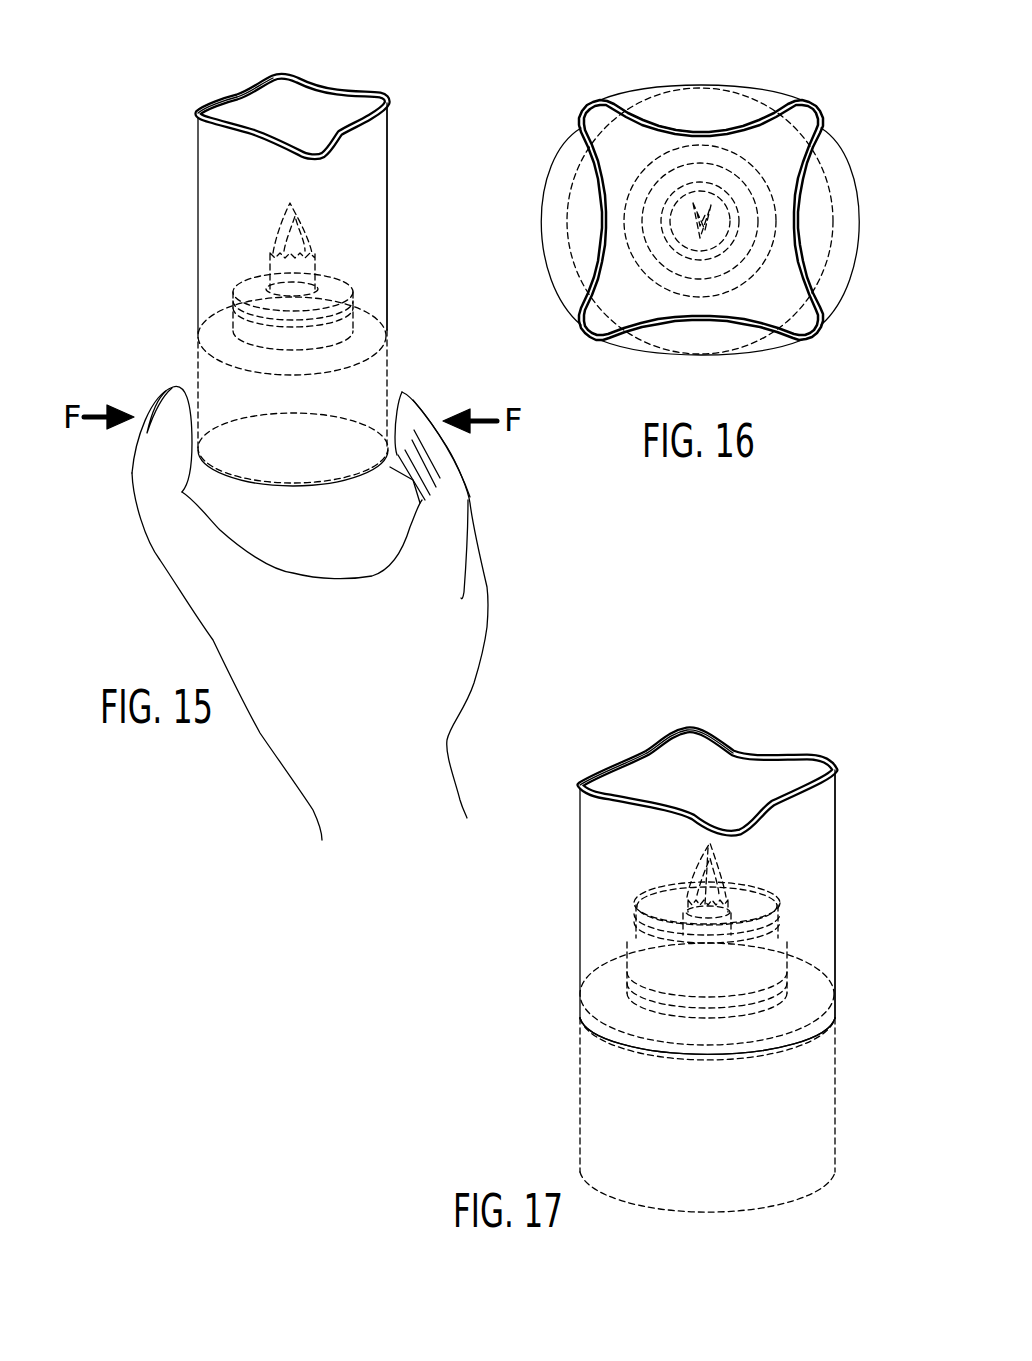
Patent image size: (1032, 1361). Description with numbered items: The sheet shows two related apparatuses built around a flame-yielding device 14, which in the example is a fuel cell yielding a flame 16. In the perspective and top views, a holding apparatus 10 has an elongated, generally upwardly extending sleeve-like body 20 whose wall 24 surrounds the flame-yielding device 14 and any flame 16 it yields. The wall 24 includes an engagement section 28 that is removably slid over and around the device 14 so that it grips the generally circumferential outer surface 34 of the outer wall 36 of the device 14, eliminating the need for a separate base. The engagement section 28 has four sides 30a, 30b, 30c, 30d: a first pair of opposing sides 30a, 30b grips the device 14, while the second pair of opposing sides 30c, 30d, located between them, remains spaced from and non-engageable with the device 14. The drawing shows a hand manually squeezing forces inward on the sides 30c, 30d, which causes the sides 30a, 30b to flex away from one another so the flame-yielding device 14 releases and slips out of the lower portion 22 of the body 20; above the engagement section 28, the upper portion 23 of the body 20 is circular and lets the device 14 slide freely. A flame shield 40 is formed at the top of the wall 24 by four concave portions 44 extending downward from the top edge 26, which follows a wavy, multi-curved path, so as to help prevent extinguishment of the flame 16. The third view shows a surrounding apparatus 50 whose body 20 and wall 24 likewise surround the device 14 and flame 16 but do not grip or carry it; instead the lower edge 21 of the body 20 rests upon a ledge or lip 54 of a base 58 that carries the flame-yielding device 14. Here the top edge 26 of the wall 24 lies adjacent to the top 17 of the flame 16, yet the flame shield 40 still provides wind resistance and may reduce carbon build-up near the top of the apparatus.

In FIG. 15, the holding apparatus 10 is at (518, 175).
In FIG. 15, the flame-yielding device 14 is at (376, 322).
In FIG. 16, the flame-yielding device 14 is at (711, 102).
In FIG. 17, the flame-yielding device 14 is at (695, 920).
In FIG. 15, the flame 16 is at (304, 222).
In FIG. 16, the flame 16 is at (714, 212).
In FIG. 17, the flame 16 is at (740, 864).
In FIG. 17, the top of the flame 17 is at (729, 834).
In FIG. 15, the body 20 is at (390, 119).
In FIG. 16, the body 20 is at (592, 104).
In FIG. 17, the body 20 is at (662, 732).
In FIG. 17, the lower edge 21 is at (745, 1018).
In FIG. 15, the lower portion 22 is at (184, 358).
In FIG. 15, the upper portion 23 is at (115, 125).
In FIG. 15, the wall 24 is at (387, 236).
In FIG. 16, the wall 24 is at (568, 269).
In FIG. 17, the wall 24 is at (837, 930).
In FIG. 15, the top edge 26 is at (198, 115).
In FIG. 16, the top edge 26 is at (805, 110).
In FIG. 17, the top edge 26 is at (586, 758).
In FIG. 15, the engagement section 28 is at (179, 380).
In FIG. 16, the engagement section 28 is at (692, 88).
In FIG. 16, the side 30a is at (708, 82).
In FIG. 15, the side 30b is at (325, 514).
In FIG. 16, the side 30b is at (701, 373).
In FIG. 15, the side 30c is at (193, 418).
In FIG. 16, the side 30c is at (541, 239).
In FIG. 15, the side 30d is at (395, 419).
In FIG. 16, the side 30d is at (860, 188).
In FIG. 15, the outer surface 34 is at (392, 358).
In FIG. 15, the outer wall 36 is at (394, 404).
In FIG. 15, the flame shield 40 is at (325, 64).
In FIG. 16, the flame shield 40 is at (812, 226).
In FIG. 17, the flame shield 40 is at (807, 825).
In FIG. 15, the concave portions 44 is at (298, 98).
In FIG. 16, the concave portions 44 is at (600, 235).
In FIG. 17, the concave portions 44 is at (753, 740).
In FIG. 17, the surrounding apparatus 50 is at (823, 701).
In FIG. 17, the ledge or lip 54 is at (662, 994).
In FIG. 17, the base 58 is at (672, 1115).